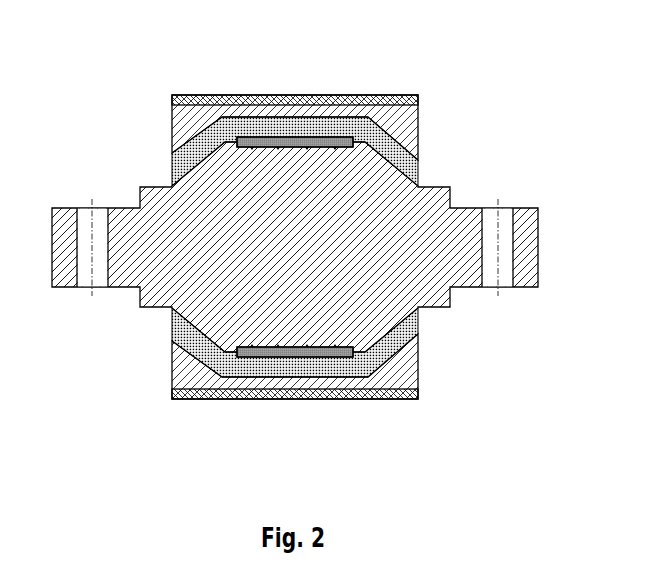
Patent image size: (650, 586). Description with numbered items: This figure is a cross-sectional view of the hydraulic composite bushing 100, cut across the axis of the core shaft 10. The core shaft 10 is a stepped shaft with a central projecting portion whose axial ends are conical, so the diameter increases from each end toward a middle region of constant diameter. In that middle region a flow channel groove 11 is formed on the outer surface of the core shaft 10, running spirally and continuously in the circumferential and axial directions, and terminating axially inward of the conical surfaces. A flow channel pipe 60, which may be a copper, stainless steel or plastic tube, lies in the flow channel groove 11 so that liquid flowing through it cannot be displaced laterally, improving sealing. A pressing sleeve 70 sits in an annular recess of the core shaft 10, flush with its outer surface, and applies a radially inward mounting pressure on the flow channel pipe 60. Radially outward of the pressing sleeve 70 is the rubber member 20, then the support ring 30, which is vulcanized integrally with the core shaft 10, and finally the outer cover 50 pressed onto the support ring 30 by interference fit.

The hydraulic composite bushing 100 is at (90, 46).
The core shaft 10 is at (150, 305).
The flow channel groove 11 is at (325, 374).
The rubber member 20 is at (276, 120).
The support ring 30 is at (208, 127).
The outer cover 50 is at (246, 396).
The flow channel pipe 60 is at (311, 379).
The pressing sleeve 70 is at (331, 118).